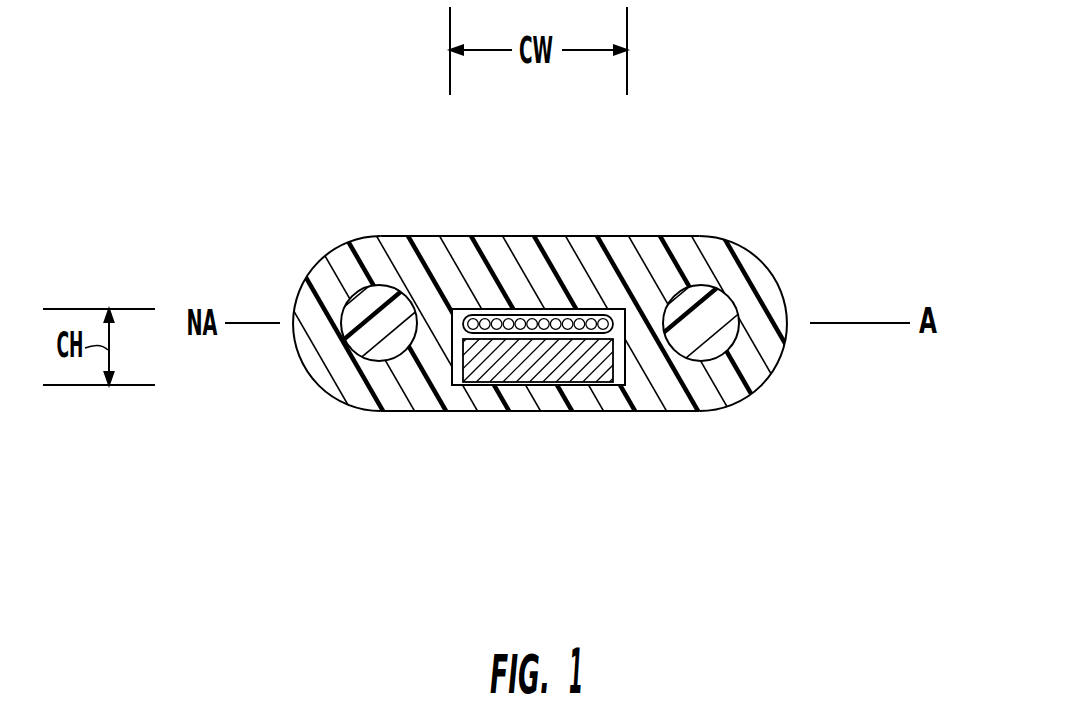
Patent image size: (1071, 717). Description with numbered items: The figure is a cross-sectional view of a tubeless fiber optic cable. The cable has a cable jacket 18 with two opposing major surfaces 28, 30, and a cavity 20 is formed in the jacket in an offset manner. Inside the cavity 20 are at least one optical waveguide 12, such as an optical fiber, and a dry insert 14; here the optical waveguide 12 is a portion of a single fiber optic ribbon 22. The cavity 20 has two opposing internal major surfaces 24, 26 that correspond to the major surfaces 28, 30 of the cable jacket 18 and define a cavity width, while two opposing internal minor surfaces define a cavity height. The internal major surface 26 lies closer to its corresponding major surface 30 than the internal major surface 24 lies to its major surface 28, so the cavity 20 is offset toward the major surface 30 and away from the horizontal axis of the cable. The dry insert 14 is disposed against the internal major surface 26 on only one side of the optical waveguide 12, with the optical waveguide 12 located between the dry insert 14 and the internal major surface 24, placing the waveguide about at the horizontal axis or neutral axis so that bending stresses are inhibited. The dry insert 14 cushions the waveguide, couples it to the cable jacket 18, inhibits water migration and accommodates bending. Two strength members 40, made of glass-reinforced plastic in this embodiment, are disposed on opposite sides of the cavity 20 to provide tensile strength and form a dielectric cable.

The optical waveguide 12 is at (577, 320).
The dry insert 14 is at (623, 385).
The cable jacket 18 is at (422, 400).
The cavity 20 is at (670, 298).
The fiber optic ribbon 22 is at (624, 324).
The internal major surface 24 is at (521, 310).
The internal major surface 26 is at (477, 383).
The major surface 28 is at (418, 237).
The major surface 30 is at (562, 411).
The strength member 40 is at (364, 306).